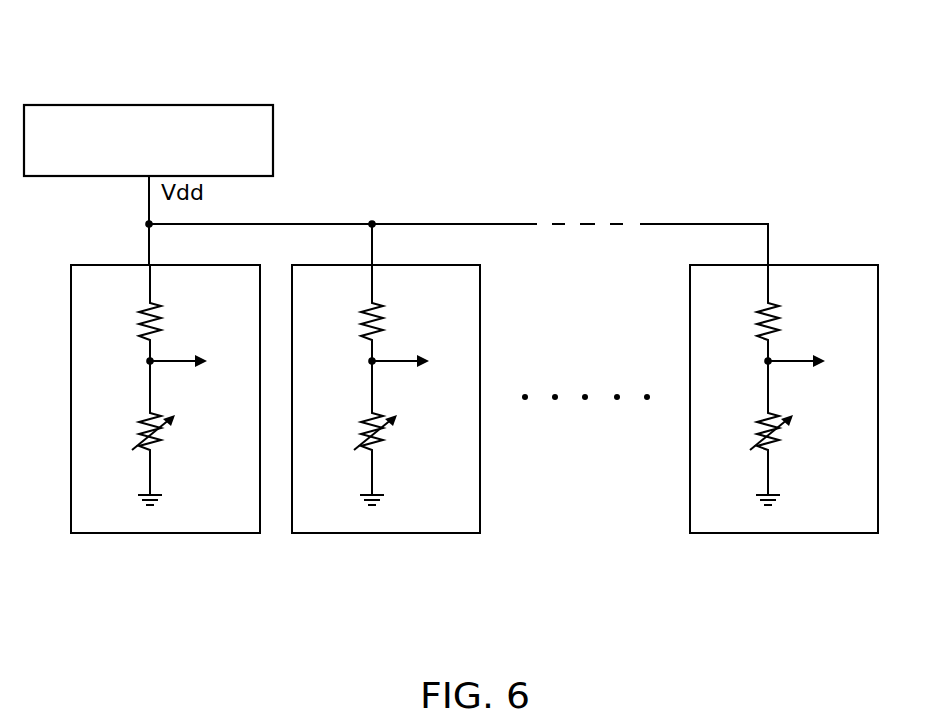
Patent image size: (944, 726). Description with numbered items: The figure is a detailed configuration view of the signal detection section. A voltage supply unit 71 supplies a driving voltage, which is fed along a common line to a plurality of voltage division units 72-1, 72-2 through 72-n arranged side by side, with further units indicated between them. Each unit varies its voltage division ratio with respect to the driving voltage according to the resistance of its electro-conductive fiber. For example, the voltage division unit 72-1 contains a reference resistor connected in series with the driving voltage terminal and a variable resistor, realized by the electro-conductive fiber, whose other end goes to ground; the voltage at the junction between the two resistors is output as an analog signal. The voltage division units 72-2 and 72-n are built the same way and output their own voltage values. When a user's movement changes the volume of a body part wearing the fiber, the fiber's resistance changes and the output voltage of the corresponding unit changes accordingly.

The voltage supply unit 71 is at (161, 104).
The voltage division unit 72-1 is at (176, 534).
The voltage division unit 72-2 is at (396, 534).
The voltage division unit 72-n is at (793, 534).